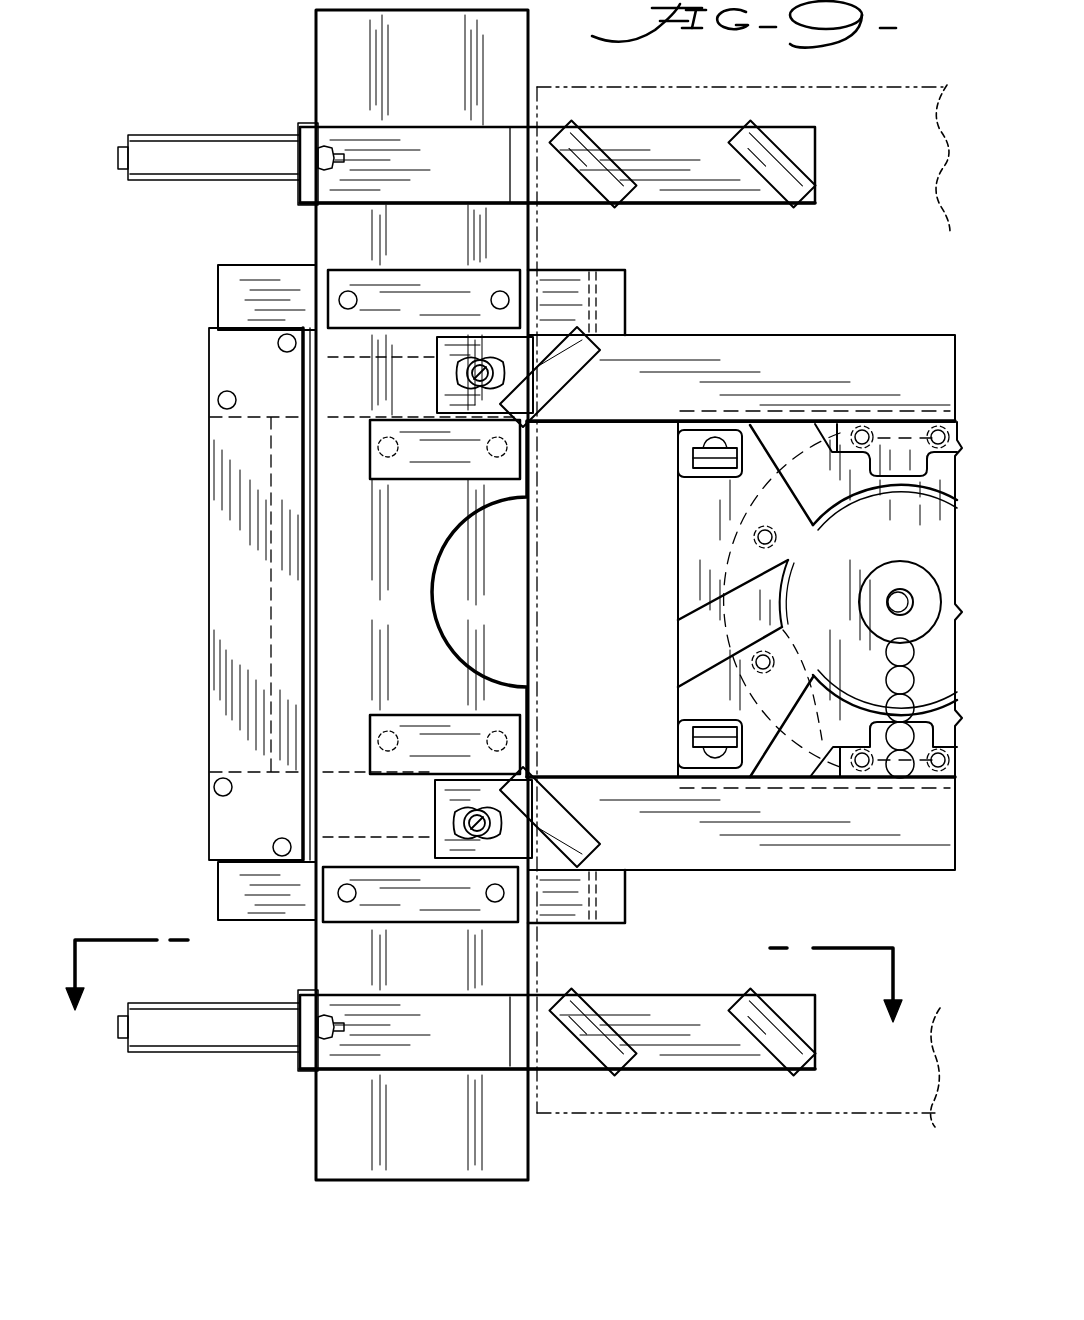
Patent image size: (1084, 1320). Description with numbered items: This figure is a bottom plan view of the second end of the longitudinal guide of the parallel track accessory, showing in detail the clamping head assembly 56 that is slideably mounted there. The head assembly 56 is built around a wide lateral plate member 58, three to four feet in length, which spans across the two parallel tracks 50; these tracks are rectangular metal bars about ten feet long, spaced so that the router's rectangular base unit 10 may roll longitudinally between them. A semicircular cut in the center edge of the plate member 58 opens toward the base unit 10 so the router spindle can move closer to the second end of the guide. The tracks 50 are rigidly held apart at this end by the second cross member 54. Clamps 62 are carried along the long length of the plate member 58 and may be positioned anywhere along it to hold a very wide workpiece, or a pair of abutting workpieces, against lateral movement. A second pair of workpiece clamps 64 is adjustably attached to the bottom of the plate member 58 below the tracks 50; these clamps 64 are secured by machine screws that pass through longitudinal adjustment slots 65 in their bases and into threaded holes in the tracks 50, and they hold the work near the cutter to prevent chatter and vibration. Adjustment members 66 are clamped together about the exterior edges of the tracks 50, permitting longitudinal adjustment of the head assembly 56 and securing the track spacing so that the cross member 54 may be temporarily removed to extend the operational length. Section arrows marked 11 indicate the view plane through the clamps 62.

The rectangular base unit 10 is at (678, 561).
The parallel tracks 50 is at (918, 335).
The second cross member 54 is at (209, 570).
The clamping head assembly 56 is at (179, 722).
The lateral plate member 58 is at (322, 48).
The clamps 62 is at (753, 205).
The second pair of workpiece clamps 64 is at (437, 392).
The longitudinal adjustment slots 65 is at (456, 372).
The adjustment members 66 is at (270, 265).
The section line 11- 11 is at (489, 998).